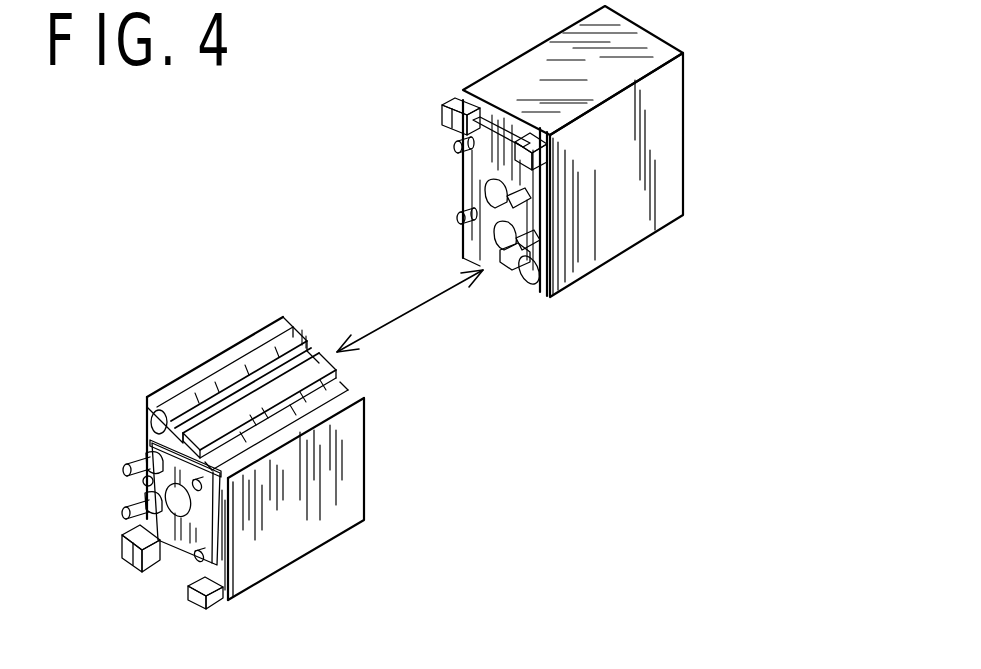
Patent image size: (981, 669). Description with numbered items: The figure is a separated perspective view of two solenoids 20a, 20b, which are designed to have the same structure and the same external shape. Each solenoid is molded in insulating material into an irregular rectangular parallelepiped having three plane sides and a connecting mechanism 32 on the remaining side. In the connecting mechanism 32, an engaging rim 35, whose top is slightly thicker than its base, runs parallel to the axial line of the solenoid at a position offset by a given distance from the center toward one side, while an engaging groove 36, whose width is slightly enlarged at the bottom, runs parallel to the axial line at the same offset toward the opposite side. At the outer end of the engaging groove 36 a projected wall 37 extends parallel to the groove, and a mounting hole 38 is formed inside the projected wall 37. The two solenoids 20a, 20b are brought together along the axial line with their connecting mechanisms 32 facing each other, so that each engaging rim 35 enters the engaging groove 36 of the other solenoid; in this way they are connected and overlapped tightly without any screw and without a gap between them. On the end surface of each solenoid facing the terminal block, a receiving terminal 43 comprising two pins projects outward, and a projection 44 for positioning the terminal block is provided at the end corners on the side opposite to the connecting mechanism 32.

The solenoid 20a is at (707, 120).
The solenoid 20b is at (302, 572).
The connecting mechanism 32 is at (493, 268).
The engaging rim 35 is at (263, 392).
The engaging groove 36 is at (268, 395).
The projected wall 37 is at (178, 393).
The mounting hole 38 is at (150, 420).
The receiving terminal 43 is at (490, 184).
The projection 44 is at (530, 133).